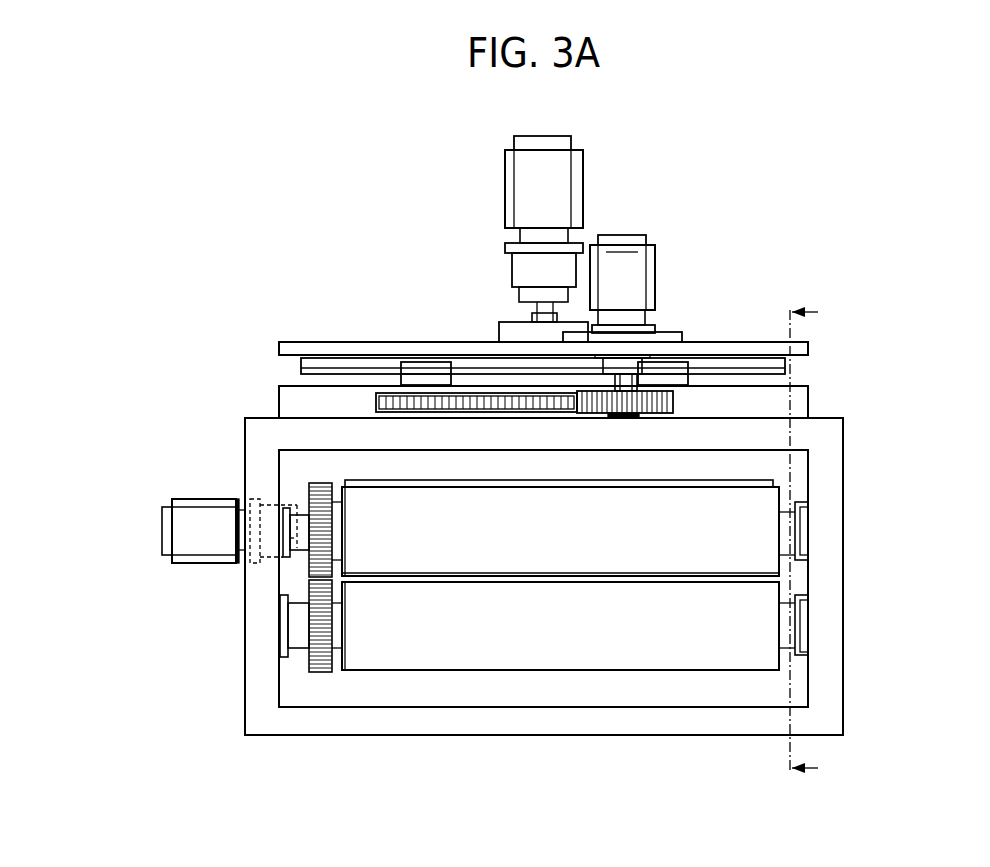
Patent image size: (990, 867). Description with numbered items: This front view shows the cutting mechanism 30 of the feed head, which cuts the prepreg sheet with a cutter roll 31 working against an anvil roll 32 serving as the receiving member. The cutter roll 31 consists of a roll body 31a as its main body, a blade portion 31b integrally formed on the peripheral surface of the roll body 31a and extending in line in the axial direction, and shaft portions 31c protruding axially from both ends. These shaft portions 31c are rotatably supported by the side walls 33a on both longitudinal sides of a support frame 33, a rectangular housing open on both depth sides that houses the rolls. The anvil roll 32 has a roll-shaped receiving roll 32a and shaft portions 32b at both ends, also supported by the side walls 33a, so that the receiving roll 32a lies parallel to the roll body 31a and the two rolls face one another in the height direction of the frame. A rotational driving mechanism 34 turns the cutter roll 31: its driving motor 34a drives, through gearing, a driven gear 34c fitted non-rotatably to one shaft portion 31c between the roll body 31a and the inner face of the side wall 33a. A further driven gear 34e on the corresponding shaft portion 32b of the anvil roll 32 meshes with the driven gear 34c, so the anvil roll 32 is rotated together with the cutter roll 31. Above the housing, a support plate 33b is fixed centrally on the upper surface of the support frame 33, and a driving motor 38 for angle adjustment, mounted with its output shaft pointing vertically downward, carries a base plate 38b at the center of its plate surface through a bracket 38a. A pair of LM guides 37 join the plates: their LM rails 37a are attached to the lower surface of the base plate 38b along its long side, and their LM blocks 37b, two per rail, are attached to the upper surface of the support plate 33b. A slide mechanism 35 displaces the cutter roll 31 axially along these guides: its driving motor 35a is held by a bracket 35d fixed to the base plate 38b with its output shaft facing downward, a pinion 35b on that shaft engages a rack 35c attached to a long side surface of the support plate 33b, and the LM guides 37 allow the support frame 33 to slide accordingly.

The cutting mechanism 30 is at (232, 187).
The cutter roll 31 is at (753, 478).
The roll body 31a is at (757, 513).
The blade portion 31b is at (533, 483).
The shaft portions 31c is at (302, 516).
The anvil roll 32 is at (491, 670).
The receiving roll 32a is at (620, 652).
The shaft portions 32b is at (298, 633).
The support frame 33 is at (846, 711).
The side walls 33a is at (258, 653).
The support plate 33b is at (800, 403).
The rotational driving mechanism 34 is at (202, 487).
The driving motor 34a is at (192, 544).
The driven gear 34c is at (320, 493).
The driven gear 34e is at (320, 662).
The slide mechanism 35 is at (674, 247).
The driving motor 35a is at (620, 255).
The pinion 35b is at (630, 403).
The rack 35c is at (497, 402).
The bracket 35d is at (637, 337).
The LM guides 37 is at (293, 369).
The LM rails 37a is at (343, 366).
The LM blocks 37b is at (425, 372).
The driving motor 38 is at (530, 185).
The bracket 38a is at (540, 322).
The base plate 38b is at (312, 348).